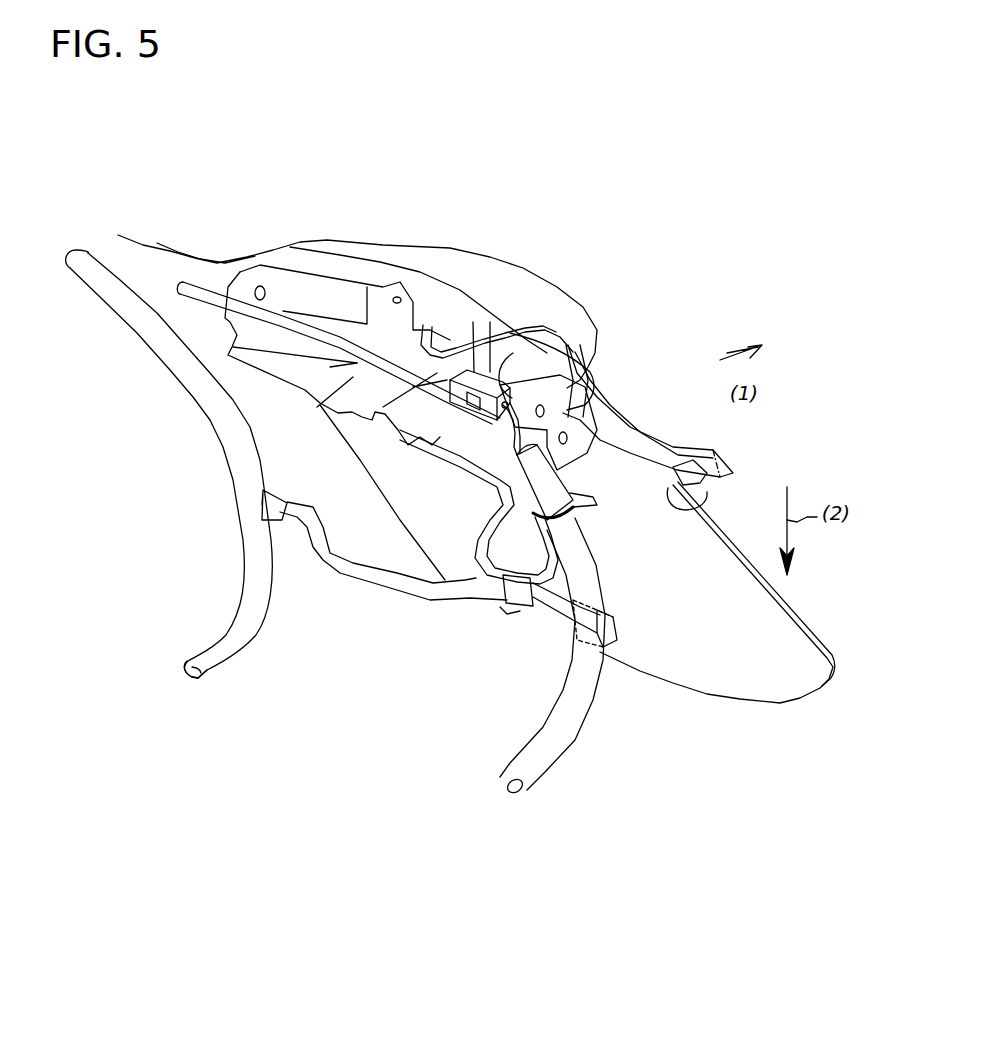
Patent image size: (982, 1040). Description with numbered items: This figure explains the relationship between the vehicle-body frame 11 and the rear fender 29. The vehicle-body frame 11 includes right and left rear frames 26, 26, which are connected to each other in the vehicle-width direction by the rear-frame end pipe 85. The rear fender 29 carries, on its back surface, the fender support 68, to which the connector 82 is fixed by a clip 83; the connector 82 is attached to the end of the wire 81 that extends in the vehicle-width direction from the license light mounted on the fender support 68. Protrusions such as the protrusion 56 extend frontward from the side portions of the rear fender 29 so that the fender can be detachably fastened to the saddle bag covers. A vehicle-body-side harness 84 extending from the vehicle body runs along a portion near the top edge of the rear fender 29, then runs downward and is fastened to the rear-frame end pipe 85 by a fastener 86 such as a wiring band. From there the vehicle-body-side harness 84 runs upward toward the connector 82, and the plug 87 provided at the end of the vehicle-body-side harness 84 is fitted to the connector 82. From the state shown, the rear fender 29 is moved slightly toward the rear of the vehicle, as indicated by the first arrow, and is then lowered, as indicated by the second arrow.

The vehicle-body frame 11 is at (587, 743).
The rear frame 26 is at (186, 673).
The rear fender 29 is at (552, 297).
The protrusion 56 is at (690, 505).
The fender support 68 is at (273, 365).
The wire 81 is at (437, 347).
The connector 82 is at (474, 372).
The clip 83 is at (522, 358).
The vehicle-body-side harness 84 is at (486, 520).
The rear-frame end pipe 85 is at (383, 580).
The fastener 86 is at (527, 610).
The plug 87 is at (567, 382).